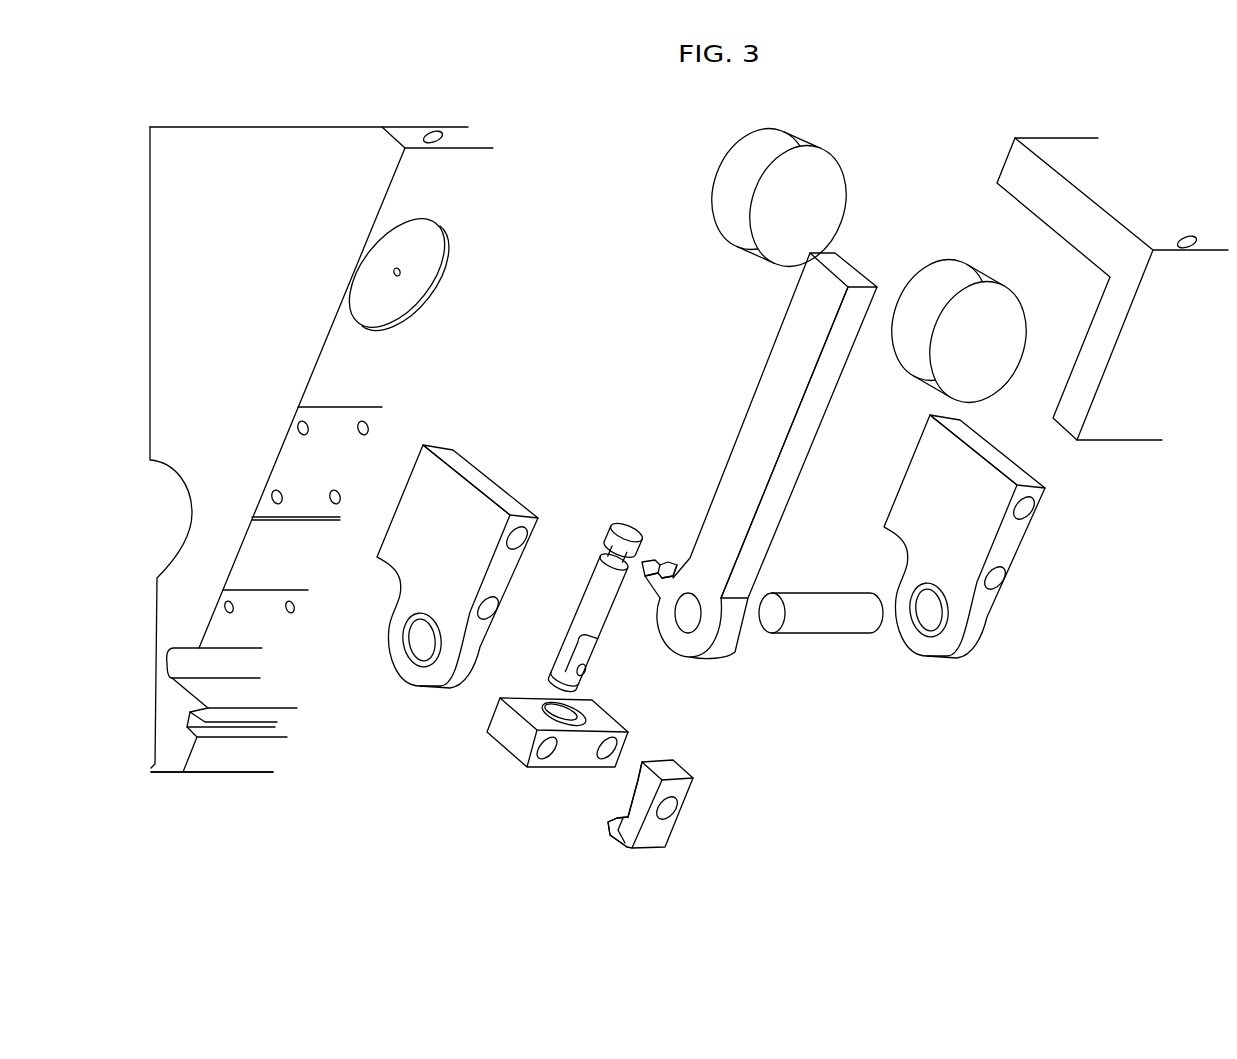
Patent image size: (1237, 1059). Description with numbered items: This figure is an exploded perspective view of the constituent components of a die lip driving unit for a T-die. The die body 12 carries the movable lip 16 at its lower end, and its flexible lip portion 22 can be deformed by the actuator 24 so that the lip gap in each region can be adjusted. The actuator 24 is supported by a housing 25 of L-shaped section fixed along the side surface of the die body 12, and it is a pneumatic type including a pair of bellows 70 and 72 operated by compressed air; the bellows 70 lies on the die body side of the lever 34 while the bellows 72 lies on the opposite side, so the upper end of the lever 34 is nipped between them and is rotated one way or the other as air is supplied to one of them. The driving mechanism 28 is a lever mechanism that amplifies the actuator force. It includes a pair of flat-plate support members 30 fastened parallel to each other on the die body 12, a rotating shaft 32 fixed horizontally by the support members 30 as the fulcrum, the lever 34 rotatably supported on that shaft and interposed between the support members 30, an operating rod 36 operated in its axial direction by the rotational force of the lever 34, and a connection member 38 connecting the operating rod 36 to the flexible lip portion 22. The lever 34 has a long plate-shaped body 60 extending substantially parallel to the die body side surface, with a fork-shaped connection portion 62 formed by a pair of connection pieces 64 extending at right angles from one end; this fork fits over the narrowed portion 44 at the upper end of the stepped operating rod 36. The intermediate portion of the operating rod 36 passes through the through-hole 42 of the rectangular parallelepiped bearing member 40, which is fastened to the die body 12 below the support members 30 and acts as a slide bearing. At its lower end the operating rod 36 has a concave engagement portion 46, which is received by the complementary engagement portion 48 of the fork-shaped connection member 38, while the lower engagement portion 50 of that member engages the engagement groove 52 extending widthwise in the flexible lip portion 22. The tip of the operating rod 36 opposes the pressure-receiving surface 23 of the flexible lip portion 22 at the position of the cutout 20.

The die body 12 is at (300, 127).
The movable lip 16 is at (212, 814).
The cutout 20 is at (237, 665).
The flexible lip portion 22 is at (170, 774).
The pressure-receiving surface 23 is at (245, 695).
The actuator 24 is at (1022, 393).
The housing 25 is at (1068, 146).
The driving mechanism 28 is at (672, 692).
The support member 30 is at (443, 686).
The rotating shaft 32 is at (822, 628).
The lever 34 is at (795, 472).
The operating rod 36 is at (613, 620).
The connection member 38 is at (668, 820).
The bearing member 40 is at (565, 768).
The through-hole 42 is at (555, 708).
The narrowed portion 44 is at (612, 557).
The engagement portion 46 is at (598, 655).
The engagement portion 48 is at (637, 762).
The engagement portion 50 is at (608, 823).
The engagement groove 52 is at (205, 727).
The body 60 is at (747, 405).
The connection portion 62 is at (692, 494).
The connection piece 64 is at (670, 560).
The bellows 70 is at (793, 133).
The bellows 72 is at (952, 267).